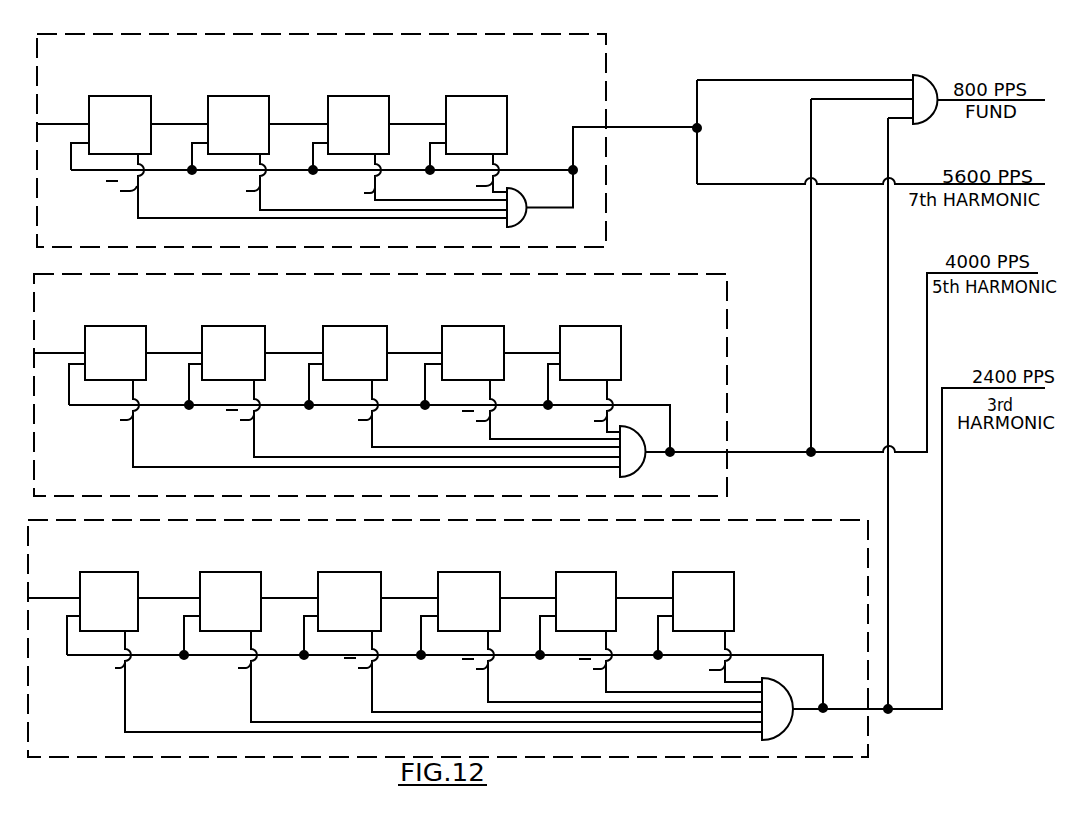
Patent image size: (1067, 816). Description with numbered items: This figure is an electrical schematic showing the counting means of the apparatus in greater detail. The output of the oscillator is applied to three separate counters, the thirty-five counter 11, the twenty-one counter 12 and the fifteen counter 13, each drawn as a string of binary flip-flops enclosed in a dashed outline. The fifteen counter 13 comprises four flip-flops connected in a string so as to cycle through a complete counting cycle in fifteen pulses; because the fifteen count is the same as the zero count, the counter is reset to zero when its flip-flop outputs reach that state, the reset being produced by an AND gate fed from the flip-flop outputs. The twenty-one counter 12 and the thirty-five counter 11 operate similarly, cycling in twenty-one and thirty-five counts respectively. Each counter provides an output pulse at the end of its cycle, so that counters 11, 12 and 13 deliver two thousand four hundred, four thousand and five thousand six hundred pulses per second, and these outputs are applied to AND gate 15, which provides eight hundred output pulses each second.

The pulse counter 11 is at (840, 520).
The counter 12 is at (670, 274).
The counter 13 is at (497, 34).
The AND gate 15 is at (922, 75).